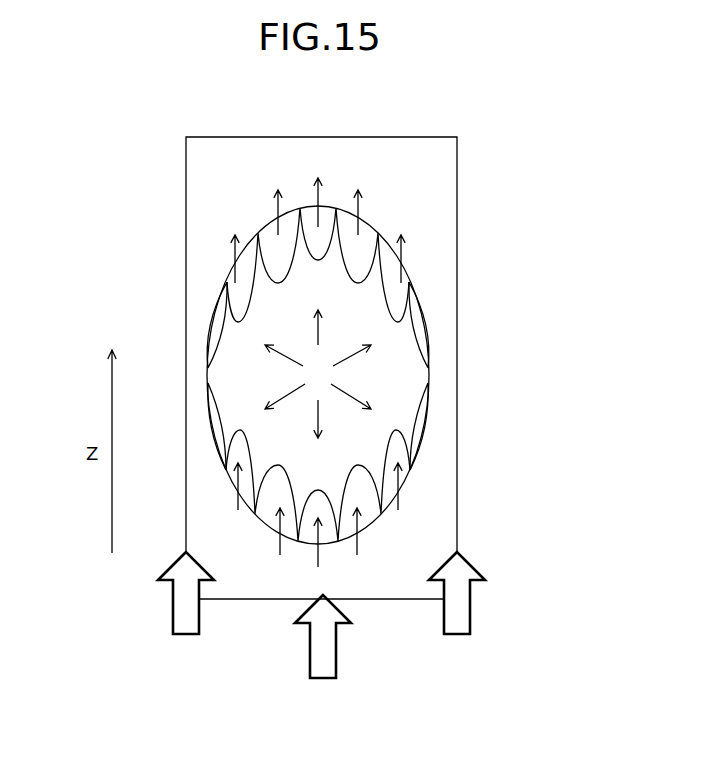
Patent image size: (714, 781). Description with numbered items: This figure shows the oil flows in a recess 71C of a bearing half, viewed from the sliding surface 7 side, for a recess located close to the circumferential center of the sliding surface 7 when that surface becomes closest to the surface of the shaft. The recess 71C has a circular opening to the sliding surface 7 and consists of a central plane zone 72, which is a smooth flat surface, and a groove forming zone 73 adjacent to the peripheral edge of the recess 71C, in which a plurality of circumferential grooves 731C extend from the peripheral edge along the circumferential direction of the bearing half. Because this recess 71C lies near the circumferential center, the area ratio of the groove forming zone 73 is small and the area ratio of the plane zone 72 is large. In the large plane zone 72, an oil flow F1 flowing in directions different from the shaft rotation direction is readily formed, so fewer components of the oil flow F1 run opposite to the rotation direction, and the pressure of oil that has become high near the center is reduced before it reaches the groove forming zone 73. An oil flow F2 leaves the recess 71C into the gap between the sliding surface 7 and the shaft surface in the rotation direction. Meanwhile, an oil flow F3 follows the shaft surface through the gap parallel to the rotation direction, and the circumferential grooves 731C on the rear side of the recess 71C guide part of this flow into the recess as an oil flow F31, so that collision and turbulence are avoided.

The sliding surface 7 is at (237, 207).
The recess 71C is at (440, 356).
The plane zone 72 is at (237, 365).
The groove forming zone 73 is at (262, 510).
The circumferential grooves 731C is at (225, 308).
The oil flow F1 is at (370, 404).
The oil flow F2 is at (358, 210).
The oil flow F3 is at (455, 603).
The oil flow F31 is at (402, 502).